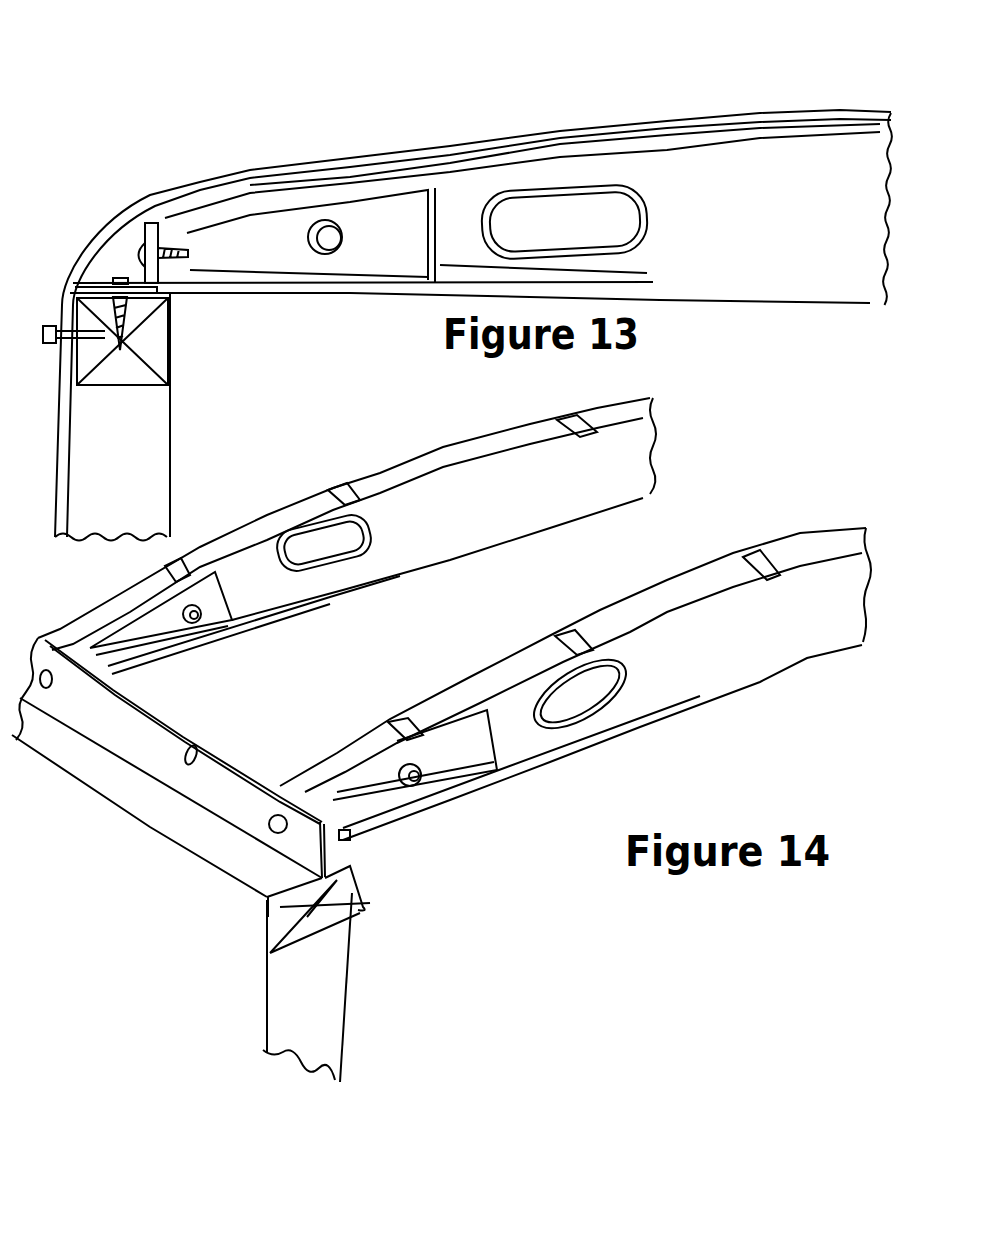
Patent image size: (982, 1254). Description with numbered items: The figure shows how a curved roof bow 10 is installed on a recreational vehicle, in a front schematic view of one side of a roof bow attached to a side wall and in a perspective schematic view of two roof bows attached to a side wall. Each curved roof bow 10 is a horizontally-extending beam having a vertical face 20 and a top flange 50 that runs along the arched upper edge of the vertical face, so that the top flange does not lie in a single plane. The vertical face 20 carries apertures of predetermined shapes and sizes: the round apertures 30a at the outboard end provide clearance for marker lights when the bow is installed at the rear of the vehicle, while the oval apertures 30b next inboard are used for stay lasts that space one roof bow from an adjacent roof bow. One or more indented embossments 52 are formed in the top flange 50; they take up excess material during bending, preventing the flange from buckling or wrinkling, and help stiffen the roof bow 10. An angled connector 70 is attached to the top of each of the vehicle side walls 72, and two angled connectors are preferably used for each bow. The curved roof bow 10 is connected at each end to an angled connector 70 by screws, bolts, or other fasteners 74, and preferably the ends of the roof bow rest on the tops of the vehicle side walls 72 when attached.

In FIG. 13, the curved roof bow 10 is at (473, 272).
In FIG. 14, the curved roof bow 10 is at (457, 608).
In FIG. 13, the vertical face 20 is at (668, 197).
In FIG. 14, the vertical face 20 is at (733, 668).
In FIG. 14, the round apertures 30a is at (412, 764).
In FIG. 14, the oval apertures 30b is at (325, 558).
In FIG. 14, the top flange 50 is at (442, 467).
In FIG. 14, the indented embossments 52 is at (333, 488).
In FIG. 13, the angled connector 70 is at (157, 293).
In FIG. 14, the angled connector 70 is at (197, 748).
In FIG. 13, the vehicle side walls 72 is at (153, 405).
In FIG. 14, the vehicle side walls 72 is at (330, 863).
In FIG. 13, the fasteners 74 is at (175, 257).
In FIG. 14, the fasteners 74 is at (268, 825).